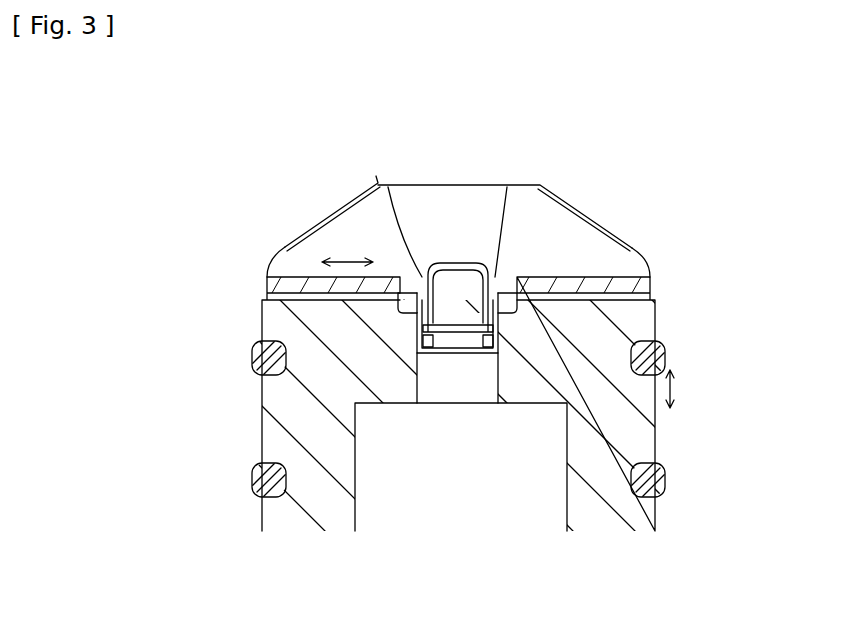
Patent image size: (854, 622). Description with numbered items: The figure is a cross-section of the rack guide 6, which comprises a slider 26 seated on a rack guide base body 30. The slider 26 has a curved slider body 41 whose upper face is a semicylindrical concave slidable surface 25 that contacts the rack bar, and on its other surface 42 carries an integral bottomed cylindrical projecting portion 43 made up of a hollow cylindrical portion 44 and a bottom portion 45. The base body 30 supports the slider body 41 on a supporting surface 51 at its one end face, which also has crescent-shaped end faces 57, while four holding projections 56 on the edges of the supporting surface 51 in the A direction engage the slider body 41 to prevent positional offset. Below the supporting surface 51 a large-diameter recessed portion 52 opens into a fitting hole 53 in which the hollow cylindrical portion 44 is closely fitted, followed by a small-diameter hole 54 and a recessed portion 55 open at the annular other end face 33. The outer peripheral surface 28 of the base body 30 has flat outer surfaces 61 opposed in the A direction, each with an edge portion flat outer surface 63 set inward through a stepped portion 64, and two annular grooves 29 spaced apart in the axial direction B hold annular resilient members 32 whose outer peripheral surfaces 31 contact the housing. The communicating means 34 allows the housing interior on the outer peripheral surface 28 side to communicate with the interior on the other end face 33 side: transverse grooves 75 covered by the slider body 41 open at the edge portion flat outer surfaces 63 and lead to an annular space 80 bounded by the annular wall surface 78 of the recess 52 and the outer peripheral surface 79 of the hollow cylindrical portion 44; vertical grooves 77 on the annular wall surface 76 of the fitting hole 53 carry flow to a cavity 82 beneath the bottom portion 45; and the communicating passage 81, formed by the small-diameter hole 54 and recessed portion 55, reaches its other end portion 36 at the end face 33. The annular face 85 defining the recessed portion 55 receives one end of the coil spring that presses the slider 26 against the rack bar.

The rack guide 6 is at (667, 419).
The slidable surface 25 is at (462, 223).
The slider 26 is at (323, 207).
The outer peripheral surface 28 is at (254, 420).
The annular grooves 29 is at (258, 357).
The rack guide base body 30 is at (667, 310).
The outer peripheral surfaces 31 is at (253, 370).
The annular resilient members 32 is at (662, 360).
The other end face 33 is at (293, 533).
The communicating means 34 is at (640, 263).
The other end portion 36 is at (490, 517).
The slider body 41 is at (288, 249).
The other surface 42 is at (260, 313).
The projecting portion 43 is at (447, 497).
The hollow cylindrical portion 44 is at (494, 290).
The bottom portion 45 is at (419, 277).
The supporting surface 51 is at (560, 293).
The large-diameter recessed portion 52 is at (513, 293).
The fitting hole 53 is at (477, 340).
The small-diameter hole 54 is at (462, 385).
The recessed portion 55 is at (360, 512).
The holding projections 56 is at (331, 203).
The crescent-shaped end faces 57 is at (483, 185).
The flat outer surfaces 61 is at (668, 442).
The edge portion flat outer surface 63 is at (266, 300).
The stepped portion 64 is at (262, 302).
The transverse grooves 75 is at (303, 285).
The annular wall surface 76 is at (430, 345).
The vertical grooves 77 is at (420, 337).
The annular wall surface 78 is at (380, 185).
The outer peripheral surface 79 is at (500, 320).
The annular space 80 is at (406, 293).
The communicating passage 81 is at (546, 541).
The cavity 82 is at (490, 355).
The annular face 85 is at (440, 350).
The A direction A is at (345, 258).
The axial direction B is at (673, 390).